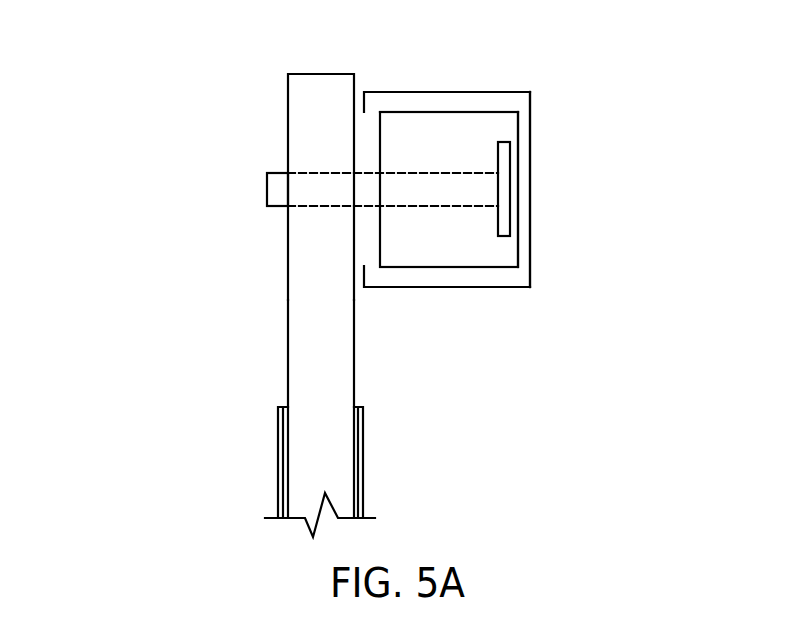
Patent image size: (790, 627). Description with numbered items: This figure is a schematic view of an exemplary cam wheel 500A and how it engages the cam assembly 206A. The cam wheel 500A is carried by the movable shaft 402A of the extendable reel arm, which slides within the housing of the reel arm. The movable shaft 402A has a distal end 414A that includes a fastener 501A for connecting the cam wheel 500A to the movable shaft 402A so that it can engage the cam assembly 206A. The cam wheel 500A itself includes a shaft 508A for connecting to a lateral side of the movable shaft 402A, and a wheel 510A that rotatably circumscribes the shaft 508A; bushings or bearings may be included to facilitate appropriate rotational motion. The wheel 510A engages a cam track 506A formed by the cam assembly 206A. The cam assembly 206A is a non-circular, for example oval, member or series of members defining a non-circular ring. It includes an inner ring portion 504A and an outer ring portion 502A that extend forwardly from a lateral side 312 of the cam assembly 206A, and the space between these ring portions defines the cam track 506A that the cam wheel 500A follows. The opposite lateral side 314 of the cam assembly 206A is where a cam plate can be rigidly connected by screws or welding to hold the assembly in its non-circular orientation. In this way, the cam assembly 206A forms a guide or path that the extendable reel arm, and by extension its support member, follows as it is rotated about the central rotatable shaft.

The movable shaft 402A is at (288, 363).
The distal end 414A is at (276, 102).
The shaft 508A is at (273, 175).
The fastener 501A is at (276, 218).
The outer ring portion 502A is at (450, 92).
The inner ring portion 504A is at (428, 287).
The lateral side 314 is at (543, 195).
The cam assembly 206A is at (543, 237).
The cam wheel 500A is at (447, 250).
The wheel 510A is at (460, 137).
The lateral side 312 is at (522, 252).
The cam track 506A is at (522, 160).